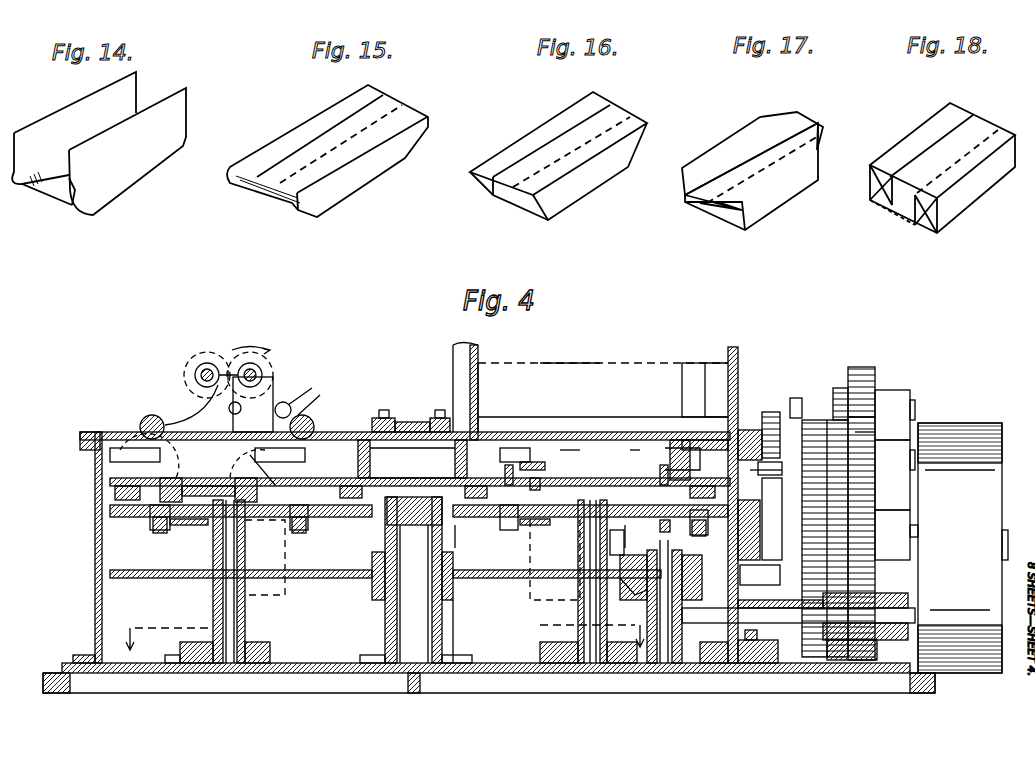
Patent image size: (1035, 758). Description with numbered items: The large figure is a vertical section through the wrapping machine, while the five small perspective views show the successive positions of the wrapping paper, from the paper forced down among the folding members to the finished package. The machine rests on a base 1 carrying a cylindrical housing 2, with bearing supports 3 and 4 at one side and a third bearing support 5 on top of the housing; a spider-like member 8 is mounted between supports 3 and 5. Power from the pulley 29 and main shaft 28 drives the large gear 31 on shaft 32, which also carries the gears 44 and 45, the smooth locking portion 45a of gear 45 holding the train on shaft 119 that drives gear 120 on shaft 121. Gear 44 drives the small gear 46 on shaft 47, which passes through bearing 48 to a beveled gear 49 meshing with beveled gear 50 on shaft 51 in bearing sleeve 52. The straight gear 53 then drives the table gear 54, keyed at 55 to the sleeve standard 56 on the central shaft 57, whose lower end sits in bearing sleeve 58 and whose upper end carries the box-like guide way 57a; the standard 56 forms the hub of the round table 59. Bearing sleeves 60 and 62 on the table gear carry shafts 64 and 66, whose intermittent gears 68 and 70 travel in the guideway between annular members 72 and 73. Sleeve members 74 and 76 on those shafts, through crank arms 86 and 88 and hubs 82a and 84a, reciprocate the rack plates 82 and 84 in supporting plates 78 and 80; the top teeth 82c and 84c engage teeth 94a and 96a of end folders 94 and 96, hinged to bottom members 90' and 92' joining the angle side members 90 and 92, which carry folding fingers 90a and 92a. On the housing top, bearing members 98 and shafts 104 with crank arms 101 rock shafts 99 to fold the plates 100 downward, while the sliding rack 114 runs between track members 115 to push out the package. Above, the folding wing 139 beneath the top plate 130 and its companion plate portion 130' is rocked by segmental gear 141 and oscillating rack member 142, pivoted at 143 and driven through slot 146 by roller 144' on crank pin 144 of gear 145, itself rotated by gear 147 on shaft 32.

The base 1 is at (458, 685).
The cylindrical casing or housing 2 is at (95, 560).
The bearing support 3 is at (737, 350).
The bearing support 4 is at (892, 405).
The bearing support 5 is at (453, 358).
The spider-like member 8 is at (381, 632).
The main shaft 28 is at (1006, 545).
The pulley 29 is at (960, 548).
The large gear 31 is at (838, 440).
The shaft 32 is at (915, 530).
The large gear 44 is at (830, 388).
The large gear 45 is at (862, 490).
The smooth locking portion 45a is at (880, 430).
The small gear 46 is at (855, 650).
The shaft 47 is at (790, 615).
The bearing 48 is at (735, 665).
The beveled gear 49 is at (690, 645).
The beveled gear 50 is at (640, 585).
The shaft 51 is at (664, 645).
The bearing sleeve 52 is at (592, 663).
The straight gear 53 is at (628, 560).
The table gear 54 is at (518, 578).
The key 55 is at (378, 582).
The sleeve standard 56 is at (386, 518).
The central bearing shaft 57 is at (425, 540).
The box-like guide way 57a is at (455, 462).
The bearing sleeve member 58 is at (444, 608).
The round table member 59 is at (115, 494).
The bearing sleeve 60 is at (580, 600).
The bearing sleeve 62 is at (265, 564).
The shaft 64 is at (578, 665).
The shaft 66 is at (230, 600).
The intermittent gear 68 is at (545, 645).
The intermittent gear 70 is at (200, 650).
The inner annular member 72 is at (332, 655).
The outer annular member 73 is at (180, 650).
The sleeve member 74 is at (623, 538).
The sleeve member 76 is at (215, 548).
The supporting plate 78 is at (540, 528).
The supporting plate 80 is at (110, 512).
The rack plate 82 is at (502, 520).
The hub-like portion 82a is at (700, 533).
The gear teeth 82c is at (537, 478).
The rack plate 84 is at (150, 515).
The hub-like portion 84a is at (158, 533).
The gear teeth 84c is at (240, 488).
The crank arm 86 is at (532, 525).
The crank arm 88 is at (188, 527).
The angle side member 90 is at (582, 450).
The bottom member 90' is at (622, 464).
The hinged folding finger 90a is at (535, 465).
The angle side member 92 is at (192, 443).
The bottom member 92' is at (256, 463).
The hinged folding finger 92a is at (110, 455).
The end folder 94 is at (520, 448).
The gear teeth 94a is at (505, 482).
The end folder 96 is at (110, 481).
The gear teeth 96a is at (172, 485).
The bearing member 98 is at (283, 402).
The bearing shaft 99 is at (150, 415).
The folding plate 100 is at (130, 432).
The crank arm 101 is at (306, 408).
The shaft 104 is at (200, 372).
The sliding rack 114 is at (412, 422).
The track member 115 is at (383, 418).
The shaft 119 is at (912, 462).
The gear 120 is at (862, 367).
The shaft 121 is at (795, 398).
The top plate 130 is at (603, 347).
The guide line 130' is at (570, 347).
The side folding wing 139 is at (585, 390).
The segmental gear 141 is at (770, 412).
The oscillating rack member 142 is at (760, 435).
The pivot 143 is at (770, 580).
The crank pin 144 is at (776, 483).
The roller 144' is at (784, 452).
The gear 145 is at (790, 605).
The slot 146 is at (772, 518).
The gear 147 is at (750, 642).